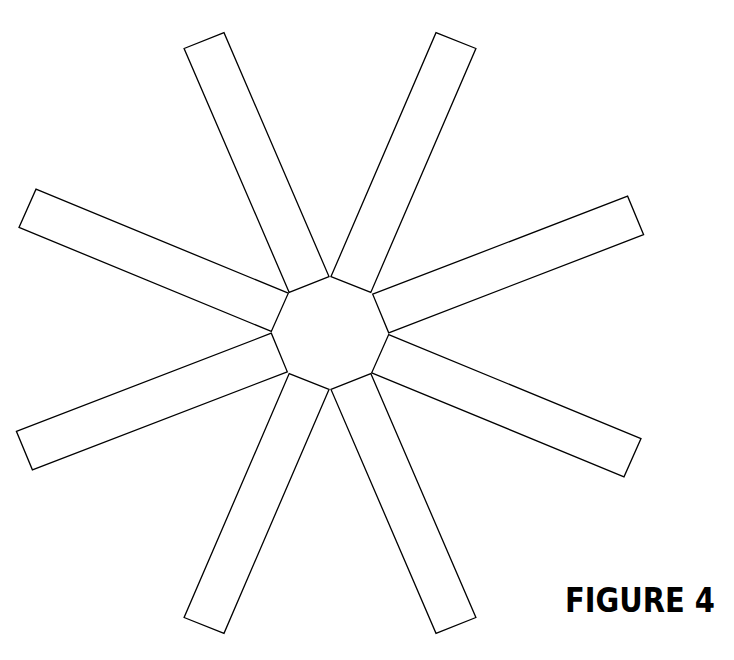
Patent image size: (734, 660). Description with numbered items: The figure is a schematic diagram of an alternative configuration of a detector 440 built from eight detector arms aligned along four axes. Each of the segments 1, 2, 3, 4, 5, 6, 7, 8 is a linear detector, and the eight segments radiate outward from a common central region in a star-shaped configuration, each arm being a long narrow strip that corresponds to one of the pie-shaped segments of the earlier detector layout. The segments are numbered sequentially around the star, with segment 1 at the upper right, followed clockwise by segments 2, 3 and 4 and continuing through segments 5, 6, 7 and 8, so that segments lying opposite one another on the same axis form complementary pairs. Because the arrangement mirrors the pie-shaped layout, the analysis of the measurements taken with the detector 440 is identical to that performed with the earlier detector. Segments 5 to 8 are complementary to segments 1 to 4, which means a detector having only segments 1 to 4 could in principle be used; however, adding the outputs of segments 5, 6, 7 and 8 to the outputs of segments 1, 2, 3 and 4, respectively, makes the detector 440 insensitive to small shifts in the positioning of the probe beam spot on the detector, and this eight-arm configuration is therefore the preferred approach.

The detector 440 is at (329, 333).
The segment 1 is at (403, 163).
The segment 2 is at (508, 264).
The segment 3 is at (506, 406).
The segment 4 is at (403, 504).
The segment 5 is at (256, 504).
The segment 6 is at (151, 401).
The segment 7 is at (153, 260).
The segment 8 is at (256, 163).